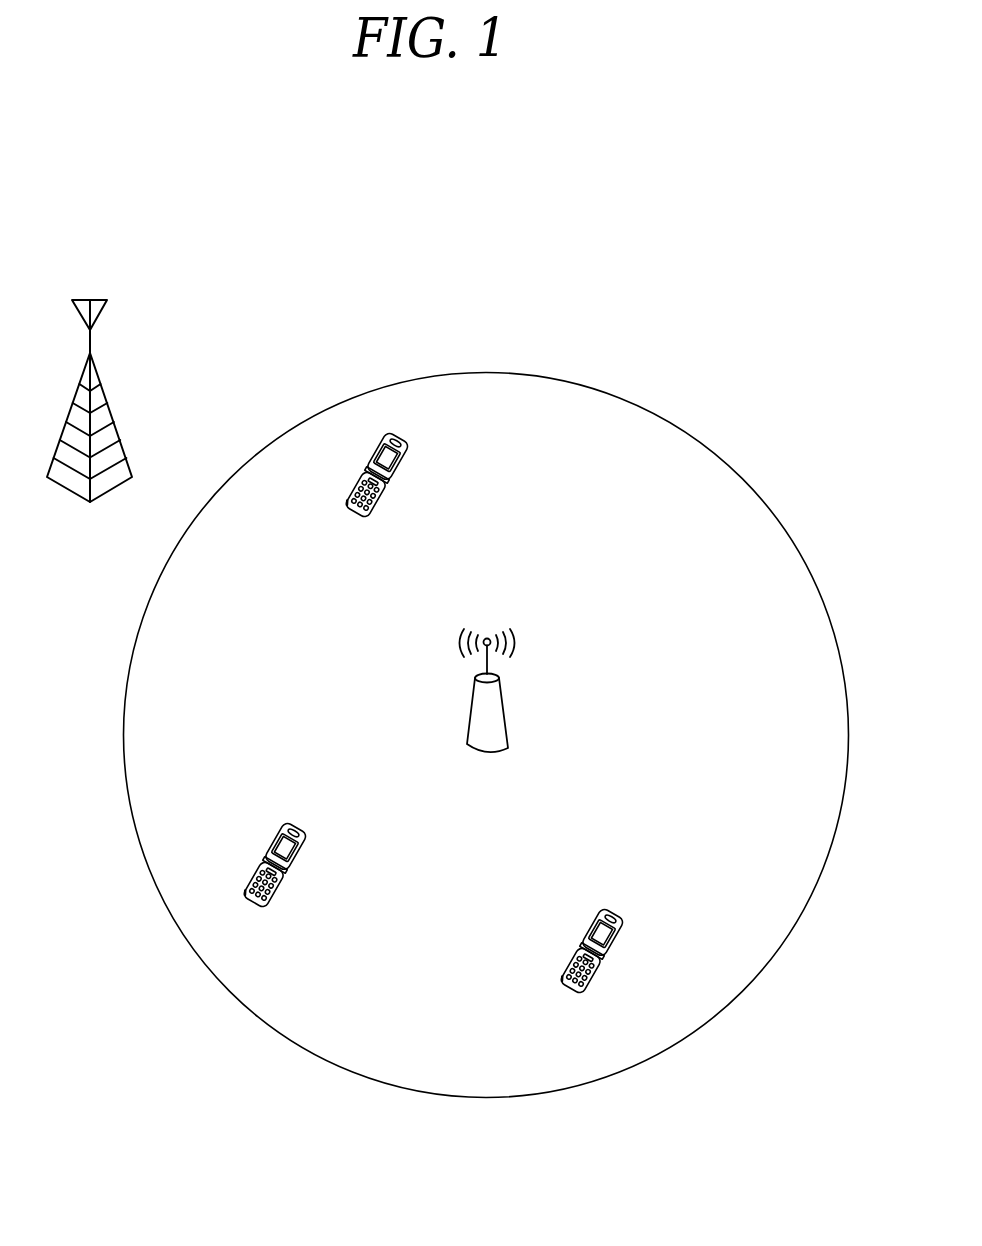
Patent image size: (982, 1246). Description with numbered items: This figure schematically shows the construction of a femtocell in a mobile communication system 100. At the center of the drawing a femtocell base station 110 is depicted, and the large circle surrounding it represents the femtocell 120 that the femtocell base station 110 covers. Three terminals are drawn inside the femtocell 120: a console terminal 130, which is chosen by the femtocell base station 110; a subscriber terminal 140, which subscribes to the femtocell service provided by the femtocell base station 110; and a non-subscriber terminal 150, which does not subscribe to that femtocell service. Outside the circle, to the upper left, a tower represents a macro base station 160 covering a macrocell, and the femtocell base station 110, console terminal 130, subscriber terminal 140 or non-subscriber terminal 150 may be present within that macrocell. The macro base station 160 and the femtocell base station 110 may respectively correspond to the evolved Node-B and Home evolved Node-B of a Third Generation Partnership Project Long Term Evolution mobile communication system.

The mobile communication system 100 is at (646, 329).
The femtocell base station 110 is at (508, 715).
The femtocell 120 is at (712, 449).
The console terminal 130 is at (280, 890).
The subscriber terminal 140 is at (597, 975).
The non-subscriber terminal 150 is at (382, 495).
The macro base station 160 is at (122, 430).